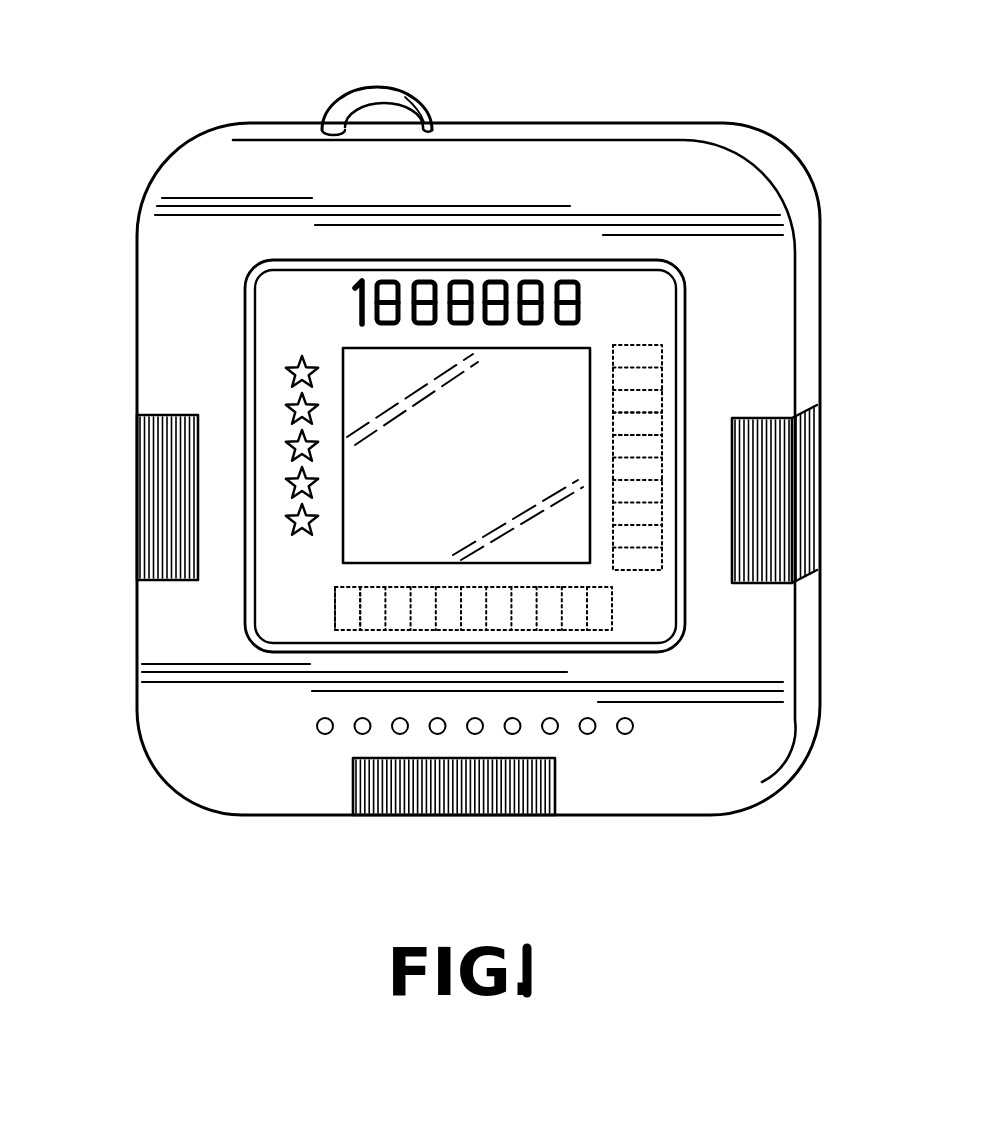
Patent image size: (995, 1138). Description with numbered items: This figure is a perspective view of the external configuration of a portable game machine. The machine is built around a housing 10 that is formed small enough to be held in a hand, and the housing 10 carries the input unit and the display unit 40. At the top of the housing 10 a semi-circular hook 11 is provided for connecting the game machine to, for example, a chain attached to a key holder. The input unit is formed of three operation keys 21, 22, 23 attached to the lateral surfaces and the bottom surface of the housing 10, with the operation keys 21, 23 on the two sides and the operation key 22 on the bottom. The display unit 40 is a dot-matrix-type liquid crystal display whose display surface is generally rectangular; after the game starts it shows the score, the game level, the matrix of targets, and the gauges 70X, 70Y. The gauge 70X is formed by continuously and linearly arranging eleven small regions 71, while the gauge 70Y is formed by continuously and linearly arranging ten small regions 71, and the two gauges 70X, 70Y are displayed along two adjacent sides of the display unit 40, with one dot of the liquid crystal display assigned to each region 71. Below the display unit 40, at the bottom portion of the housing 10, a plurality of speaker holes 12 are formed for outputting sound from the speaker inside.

The housing 10 is at (656, 137).
The semi-circular hook 11 is at (350, 103).
The speaker holes 12 is at (556, 734).
The operation key 21 is at (160, 500).
The operation key 22 is at (418, 788).
The operation key 23 is at (752, 505).
The display unit 40 is at (528, 262).
The gauge 70X is at (606, 590).
The gauge 70Y is at (635, 343).
The small region 71 is at (640, 410).